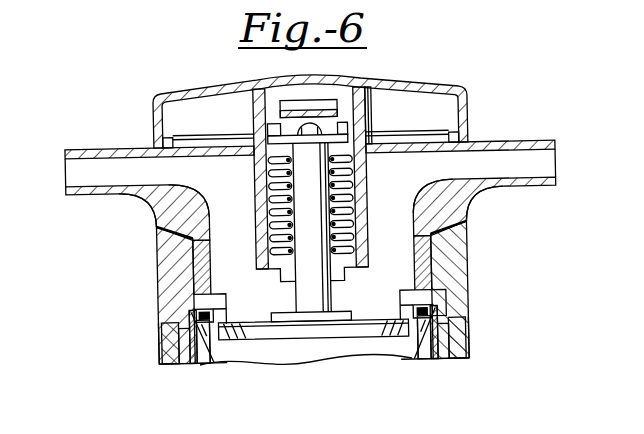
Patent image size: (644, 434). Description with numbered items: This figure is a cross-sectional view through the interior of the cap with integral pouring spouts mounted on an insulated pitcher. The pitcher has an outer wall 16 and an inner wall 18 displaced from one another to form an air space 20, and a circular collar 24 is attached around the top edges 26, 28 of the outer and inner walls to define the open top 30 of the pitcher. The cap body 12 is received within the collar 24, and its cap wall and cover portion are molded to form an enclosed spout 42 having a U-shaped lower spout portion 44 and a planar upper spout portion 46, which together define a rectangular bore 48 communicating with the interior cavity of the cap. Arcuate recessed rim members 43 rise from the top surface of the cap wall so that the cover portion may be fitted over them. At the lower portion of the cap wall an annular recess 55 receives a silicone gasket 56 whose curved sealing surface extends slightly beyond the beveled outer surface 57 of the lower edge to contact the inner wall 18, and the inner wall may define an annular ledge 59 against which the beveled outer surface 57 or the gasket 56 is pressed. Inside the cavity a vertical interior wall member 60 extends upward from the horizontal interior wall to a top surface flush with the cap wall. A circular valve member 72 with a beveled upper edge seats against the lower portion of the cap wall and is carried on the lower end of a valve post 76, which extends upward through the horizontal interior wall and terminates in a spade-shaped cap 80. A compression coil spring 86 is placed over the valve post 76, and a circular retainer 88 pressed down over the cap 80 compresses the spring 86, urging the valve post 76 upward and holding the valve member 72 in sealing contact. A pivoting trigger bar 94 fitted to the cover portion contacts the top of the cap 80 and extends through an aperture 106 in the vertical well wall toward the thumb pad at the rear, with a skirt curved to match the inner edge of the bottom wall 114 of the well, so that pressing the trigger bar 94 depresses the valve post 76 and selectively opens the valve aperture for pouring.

The body 12 is at (152, 104).
The outer wall 16 is at (158, 350).
The inner wall 18 is at (193, 363).
The air space 20 is at (180, 363).
The circular collar 24 is at (158, 247).
The top edge of outer wall 26 is at (158, 296).
The top edge of inner wall 28 is at (192, 285).
The open top 30 is at (158, 221).
The enclosed spout 42 is at (306, 163).
The recessed rim members 43 is at (187, 156).
The lower spout portion 44 is at (78, 193).
The upper spout portion 46 is at (107, 152).
The rectangular bore 48 is at (70, 183).
The annular recess 55 is at (206, 312).
The silicone gasket 56 is at (201, 334).
The beveled outer surface 57 is at (399, 344).
The annular ledge 59 is at (455, 340).
The vertical interior wall member 60 is at (253, 181).
The circular valve member 72 is at (263, 340).
The valve post 76 is at (337, 223).
The spade-shaped cap 80 is at (263, 80).
The compression coil spring 86 is at (340, 255).
The circular retainer 88 is at (262, 113).
The pivoting trigger bar 94 is at (316, 117).
The aperture 106 is at (213, 137).
The bottom wall 114 is at (368, 130).